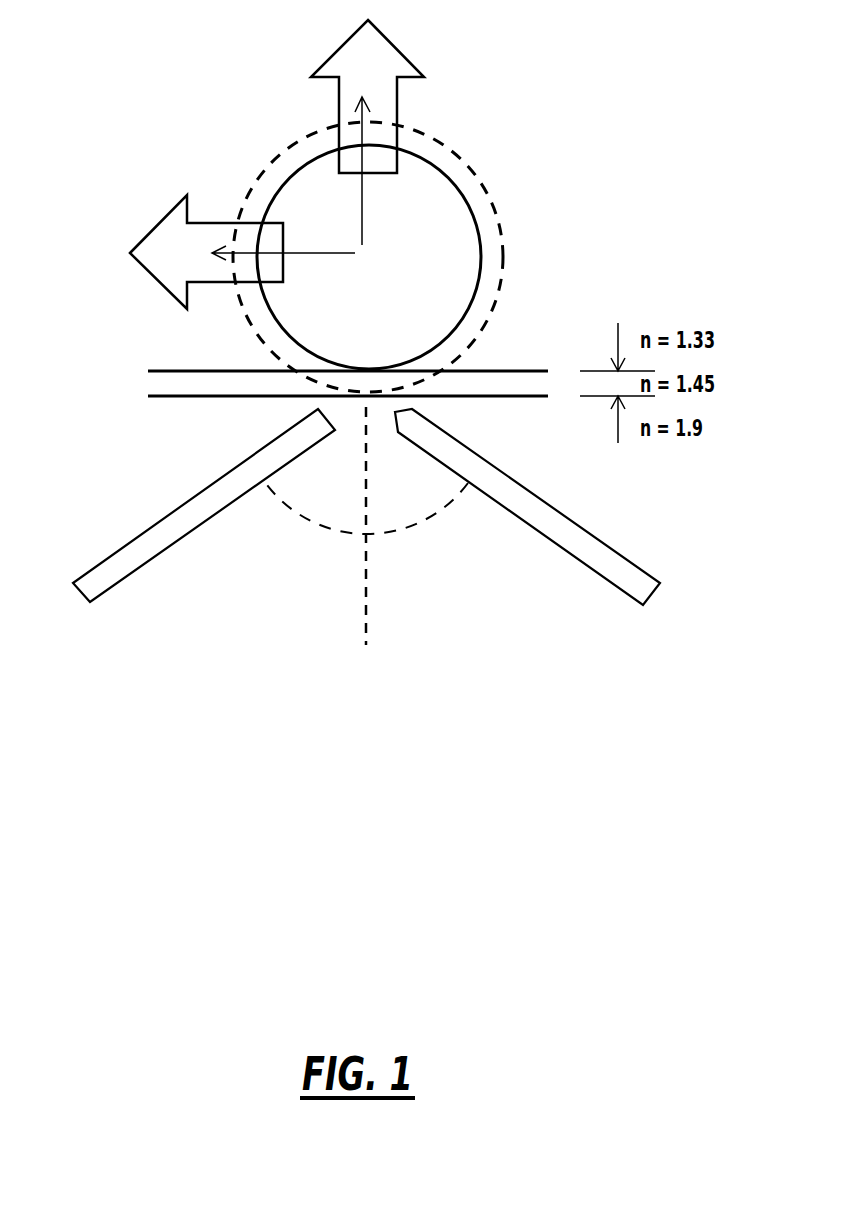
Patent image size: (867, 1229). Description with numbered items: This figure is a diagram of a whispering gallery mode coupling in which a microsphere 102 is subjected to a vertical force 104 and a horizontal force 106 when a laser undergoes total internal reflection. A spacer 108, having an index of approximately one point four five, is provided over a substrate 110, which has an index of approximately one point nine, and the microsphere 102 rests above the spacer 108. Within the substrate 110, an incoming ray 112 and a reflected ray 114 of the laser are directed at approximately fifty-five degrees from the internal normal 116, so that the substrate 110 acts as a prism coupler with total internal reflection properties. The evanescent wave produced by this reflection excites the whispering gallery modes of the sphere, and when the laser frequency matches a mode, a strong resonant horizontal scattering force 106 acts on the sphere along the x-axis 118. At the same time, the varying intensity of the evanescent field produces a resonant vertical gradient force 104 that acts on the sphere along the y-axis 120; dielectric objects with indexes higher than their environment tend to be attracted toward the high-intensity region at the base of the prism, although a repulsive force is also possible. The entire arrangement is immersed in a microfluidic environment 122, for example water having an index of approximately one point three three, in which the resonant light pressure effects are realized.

The microsphere 102 is at (470, 198).
The vertical force 104 is at (398, 52).
The horizontal force 106 is at (165, 212).
The spacer 108 is at (475, 373).
The substrate 110 is at (571, 444).
The incoming ray 112 is at (598, 537).
The reflected ray 114 is at (127, 543).
The internal normal 116 is at (367, 590).
The x-axis 118 is at (265, 248).
The y-axis 120 is at (367, 143).
The microfluidic environment 122 is at (571, 301).